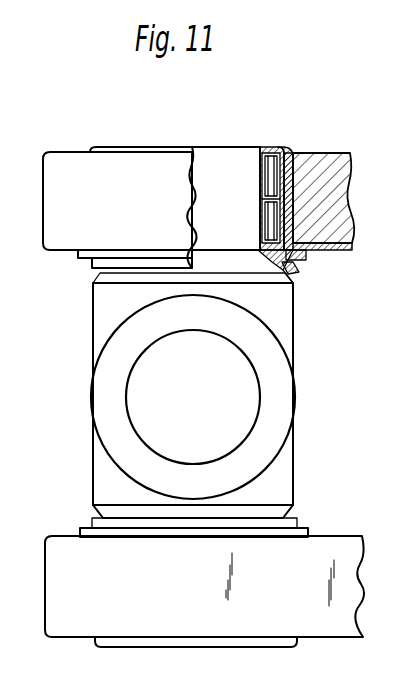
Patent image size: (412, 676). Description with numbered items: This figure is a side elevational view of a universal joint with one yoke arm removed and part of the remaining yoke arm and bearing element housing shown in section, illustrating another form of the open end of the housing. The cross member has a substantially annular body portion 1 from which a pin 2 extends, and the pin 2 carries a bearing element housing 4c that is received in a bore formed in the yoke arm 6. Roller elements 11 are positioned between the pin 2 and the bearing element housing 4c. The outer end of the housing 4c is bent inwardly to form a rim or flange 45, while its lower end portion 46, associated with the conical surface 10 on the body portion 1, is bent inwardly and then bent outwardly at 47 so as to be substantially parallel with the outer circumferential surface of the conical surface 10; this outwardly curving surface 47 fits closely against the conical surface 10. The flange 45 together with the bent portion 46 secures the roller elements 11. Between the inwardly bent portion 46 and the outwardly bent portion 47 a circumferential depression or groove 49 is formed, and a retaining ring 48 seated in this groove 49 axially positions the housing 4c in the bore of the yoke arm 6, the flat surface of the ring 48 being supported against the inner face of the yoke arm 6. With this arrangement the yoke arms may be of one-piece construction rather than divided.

The body portion 1 is at (283, 388).
The pin 2 is at (207, 148).
The rim or flange 45 is at (268, 146).
The roller elements 11 is at (248, 198).
The bearing element housing 4c is at (289, 166).
The yoke arm 6 is at (340, 215).
The lower end portion 46 is at (332, 243).
The circumferential depression or groove 49 is at (268, 257).
The retaining ring 48 is at (305, 255).
The outwardly bent portion 47 is at (292, 266).
The conical surface 10 is at (289, 272).